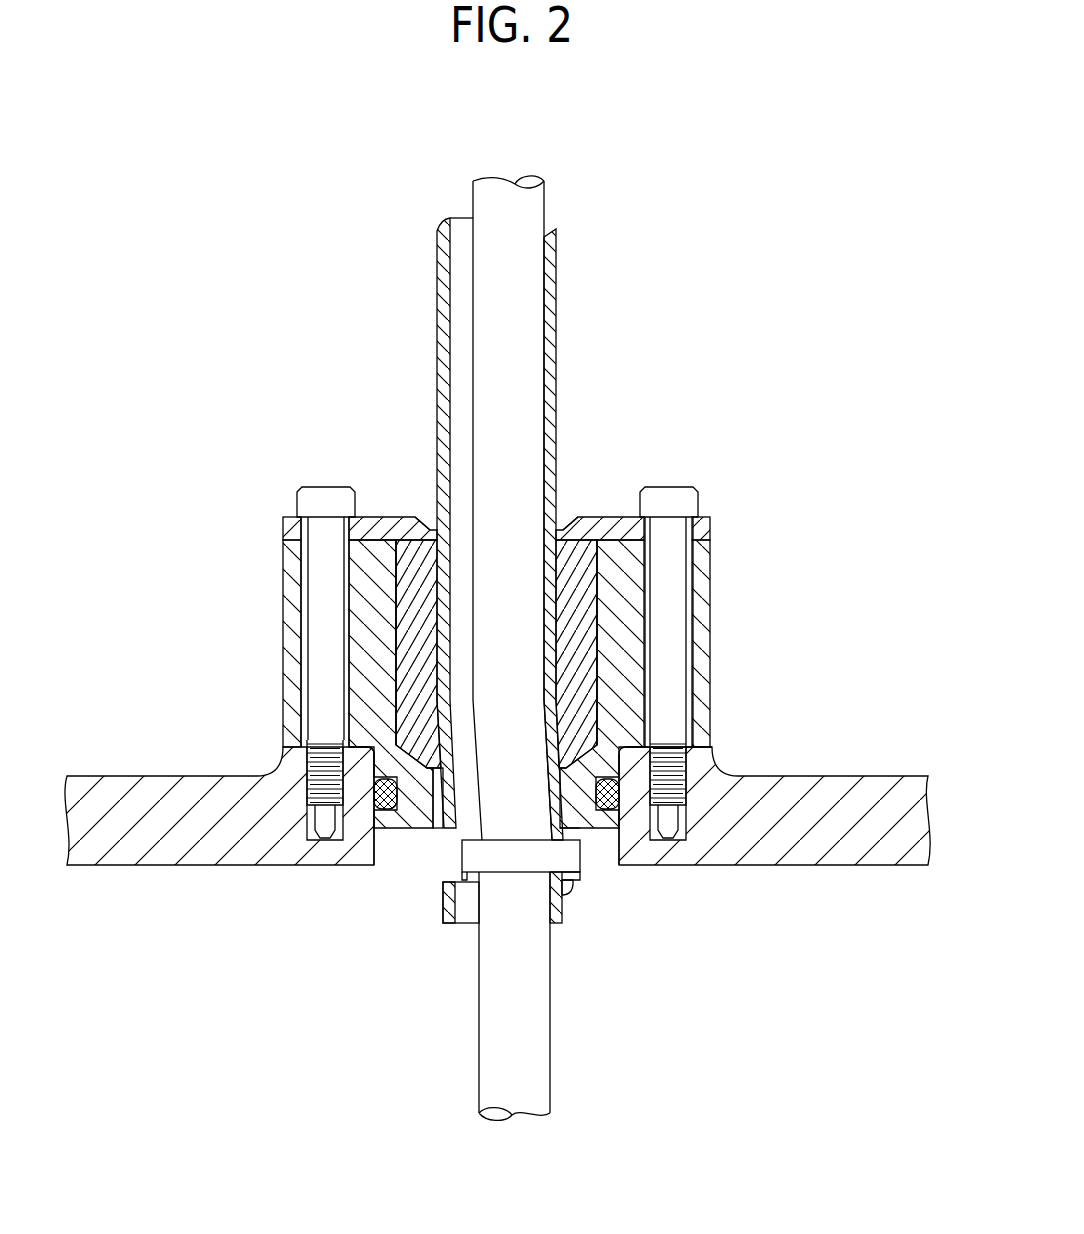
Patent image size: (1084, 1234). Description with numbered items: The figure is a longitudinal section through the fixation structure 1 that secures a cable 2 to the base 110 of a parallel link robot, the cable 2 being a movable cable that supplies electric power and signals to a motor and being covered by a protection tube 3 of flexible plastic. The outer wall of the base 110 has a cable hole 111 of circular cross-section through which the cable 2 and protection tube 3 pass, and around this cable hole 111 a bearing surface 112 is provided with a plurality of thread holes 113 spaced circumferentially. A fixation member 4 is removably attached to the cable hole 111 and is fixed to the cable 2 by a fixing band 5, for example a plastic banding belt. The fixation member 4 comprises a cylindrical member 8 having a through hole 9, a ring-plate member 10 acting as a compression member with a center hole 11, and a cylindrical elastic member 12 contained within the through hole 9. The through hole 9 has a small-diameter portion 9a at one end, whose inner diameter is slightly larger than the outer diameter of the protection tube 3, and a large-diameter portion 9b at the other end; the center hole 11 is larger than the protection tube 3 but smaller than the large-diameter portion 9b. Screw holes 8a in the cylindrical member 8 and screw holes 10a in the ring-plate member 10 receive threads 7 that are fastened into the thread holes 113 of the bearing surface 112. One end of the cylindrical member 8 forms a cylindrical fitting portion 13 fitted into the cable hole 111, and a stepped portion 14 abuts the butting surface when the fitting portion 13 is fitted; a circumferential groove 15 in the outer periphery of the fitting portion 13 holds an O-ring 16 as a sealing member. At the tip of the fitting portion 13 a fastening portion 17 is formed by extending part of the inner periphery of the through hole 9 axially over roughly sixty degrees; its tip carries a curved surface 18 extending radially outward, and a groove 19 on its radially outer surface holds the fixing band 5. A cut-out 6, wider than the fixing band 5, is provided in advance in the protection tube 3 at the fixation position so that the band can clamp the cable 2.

The fixation structure 1 is at (370, 220).
The cable 2 is at (515, 282).
The protection tube 3 is at (557, 330).
The fixation member 4 is at (585, 840).
The fixing band 5 is at (515, 857).
The cut-out 6 is at (442, 882).
The thread 7 is at (323, 486).
The cylindrical member 8 is at (725, 632).
The screw hole 8a is at (320, 600).
The through hole 9 is at (471, 692).
The small-diameter portion 9a is at (437, 818).
The large-diameter portion 9b is at (412, 545).
The ring-plate member 10 is at (725, 527).
The screw hole 10a is at (312, 513).
The center hole 11 is at (563, 517).
The cylindrical elastic member 12 is at (598, 557).
The fitting portion 13 is at (668, 833).
The stepped portion 14 is at (355, 752).
The circumferential groove 15 is at (380, 812).
The O-ring 16 is at (600, 791).
The fastening portion 17 is at (568, 883).
The curved surface 18 is at (572, 897).
The groove 19 is at (580, 880).
The base 110 is at (822, 880).
The cable hole 111 is at (621, 815).
The bearing surface 112 is at (716, 748).
The thread hole 113 is at (318, 748).